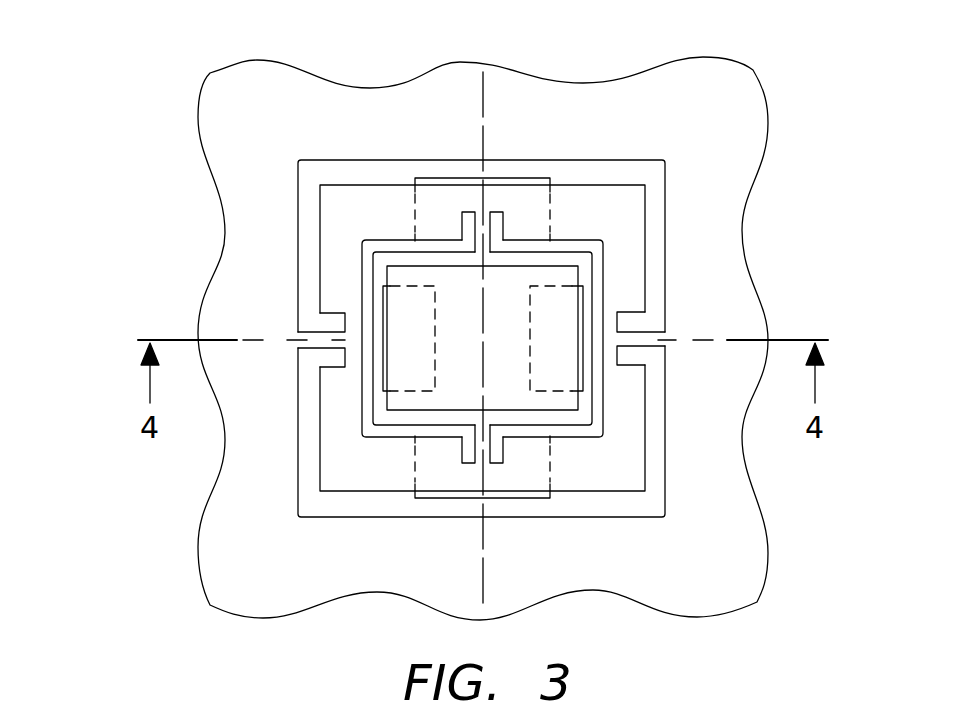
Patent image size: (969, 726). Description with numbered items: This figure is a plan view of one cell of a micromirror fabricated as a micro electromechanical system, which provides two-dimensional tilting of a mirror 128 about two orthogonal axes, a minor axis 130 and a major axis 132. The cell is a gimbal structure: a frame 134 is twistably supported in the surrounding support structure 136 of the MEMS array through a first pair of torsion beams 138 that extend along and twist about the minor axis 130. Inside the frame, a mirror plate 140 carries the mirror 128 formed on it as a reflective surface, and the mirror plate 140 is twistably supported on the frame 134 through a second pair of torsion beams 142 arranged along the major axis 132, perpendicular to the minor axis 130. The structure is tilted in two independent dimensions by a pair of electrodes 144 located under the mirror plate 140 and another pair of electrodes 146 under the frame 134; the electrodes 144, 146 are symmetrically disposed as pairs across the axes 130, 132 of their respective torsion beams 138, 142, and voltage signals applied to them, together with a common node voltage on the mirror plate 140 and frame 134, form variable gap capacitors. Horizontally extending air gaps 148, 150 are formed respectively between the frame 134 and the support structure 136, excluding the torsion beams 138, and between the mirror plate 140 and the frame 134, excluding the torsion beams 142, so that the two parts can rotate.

The mirror 128 is at (505, 345).
The minor axis 130 is at (172, 339).
The major axis 132 is at (481, 80).
The frame 134 is at (604, 197).
The support structure 136 is at (280, 120).
The first pair of torsion beams 138 is at (324, 350).
The mirror plate 140 is at (397, 418).
The second pair of torsion beams 142 is at (477, 221).
The mirror electrodes 144 is at (402, 290).
The frame electrodes 146 is at (524, 176).
The air gap 148 is at (658, 193).
The air gap 150 is at (363, 262).